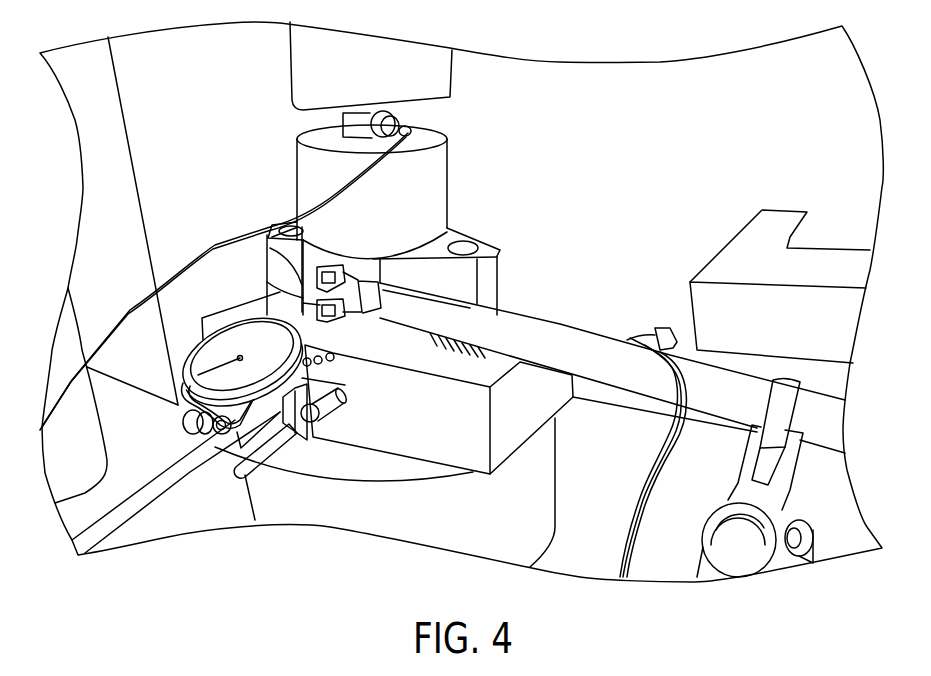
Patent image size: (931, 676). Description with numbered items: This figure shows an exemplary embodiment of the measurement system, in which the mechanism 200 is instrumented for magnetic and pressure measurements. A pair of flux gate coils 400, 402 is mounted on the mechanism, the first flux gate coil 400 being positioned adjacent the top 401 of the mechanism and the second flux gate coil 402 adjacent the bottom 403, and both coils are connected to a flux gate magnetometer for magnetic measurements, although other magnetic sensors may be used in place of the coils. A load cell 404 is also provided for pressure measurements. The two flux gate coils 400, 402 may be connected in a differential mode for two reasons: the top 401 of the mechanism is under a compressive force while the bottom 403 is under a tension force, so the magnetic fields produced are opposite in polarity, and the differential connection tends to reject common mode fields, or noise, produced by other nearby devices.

The mounting base / flange 200 is at (500, 248).
The flux gate coil 400 is at (268, 258).
The top of the mechanism 401 is at (305, 246).
The flux gate coil 402 is at (278, 295).
The bottom of the mechanism 403 is at (327, 312).
The load cell 404 is at (392, 110).